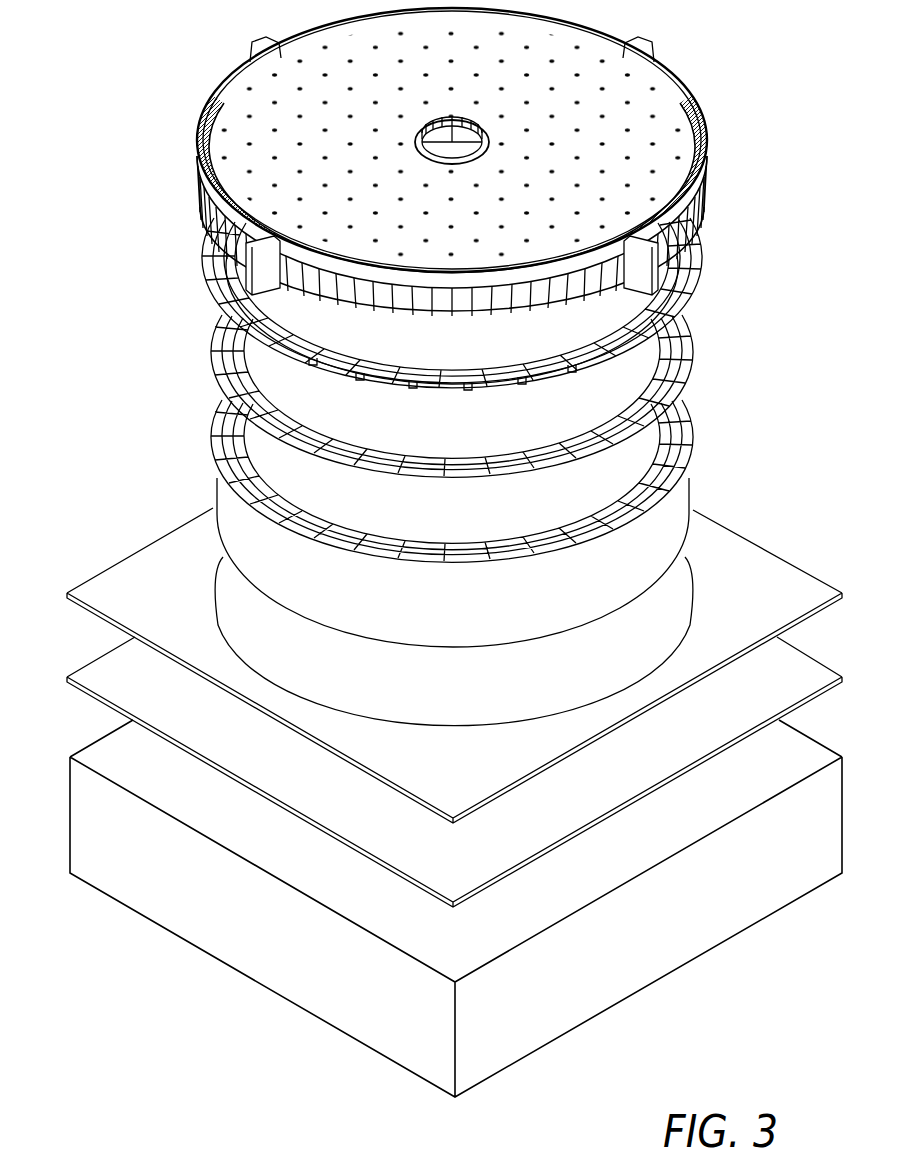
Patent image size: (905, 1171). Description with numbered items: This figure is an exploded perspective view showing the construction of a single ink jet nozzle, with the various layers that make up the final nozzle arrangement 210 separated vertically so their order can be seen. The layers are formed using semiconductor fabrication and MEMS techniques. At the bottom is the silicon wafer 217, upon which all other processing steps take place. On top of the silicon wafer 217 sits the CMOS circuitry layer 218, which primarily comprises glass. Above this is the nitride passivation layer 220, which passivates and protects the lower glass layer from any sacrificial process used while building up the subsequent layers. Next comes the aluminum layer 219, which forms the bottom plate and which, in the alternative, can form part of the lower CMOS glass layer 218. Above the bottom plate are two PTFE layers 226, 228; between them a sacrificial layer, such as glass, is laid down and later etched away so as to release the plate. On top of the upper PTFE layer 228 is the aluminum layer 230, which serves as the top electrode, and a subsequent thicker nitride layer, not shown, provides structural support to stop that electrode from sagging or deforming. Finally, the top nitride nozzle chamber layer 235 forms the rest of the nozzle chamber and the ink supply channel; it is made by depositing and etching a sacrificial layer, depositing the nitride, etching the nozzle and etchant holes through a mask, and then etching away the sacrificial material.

The nozzle arrangement 210 is at (152, 146).
The top nitride nozzle chamber layer 235 is at (663, 103).
The aluminum layer 230 is at (205, 240).
The PTFE layer 228 is at (222, 352).
The PTFE layer 226 is at (218, 437).
The aluminum layer 219 is at (218, 498).
The nitride passivation layer 220 is at (117, 574).
The CMOS circuitry layer 218 is at (94, 668).
The silicon wafer 217 is at (128, 885).